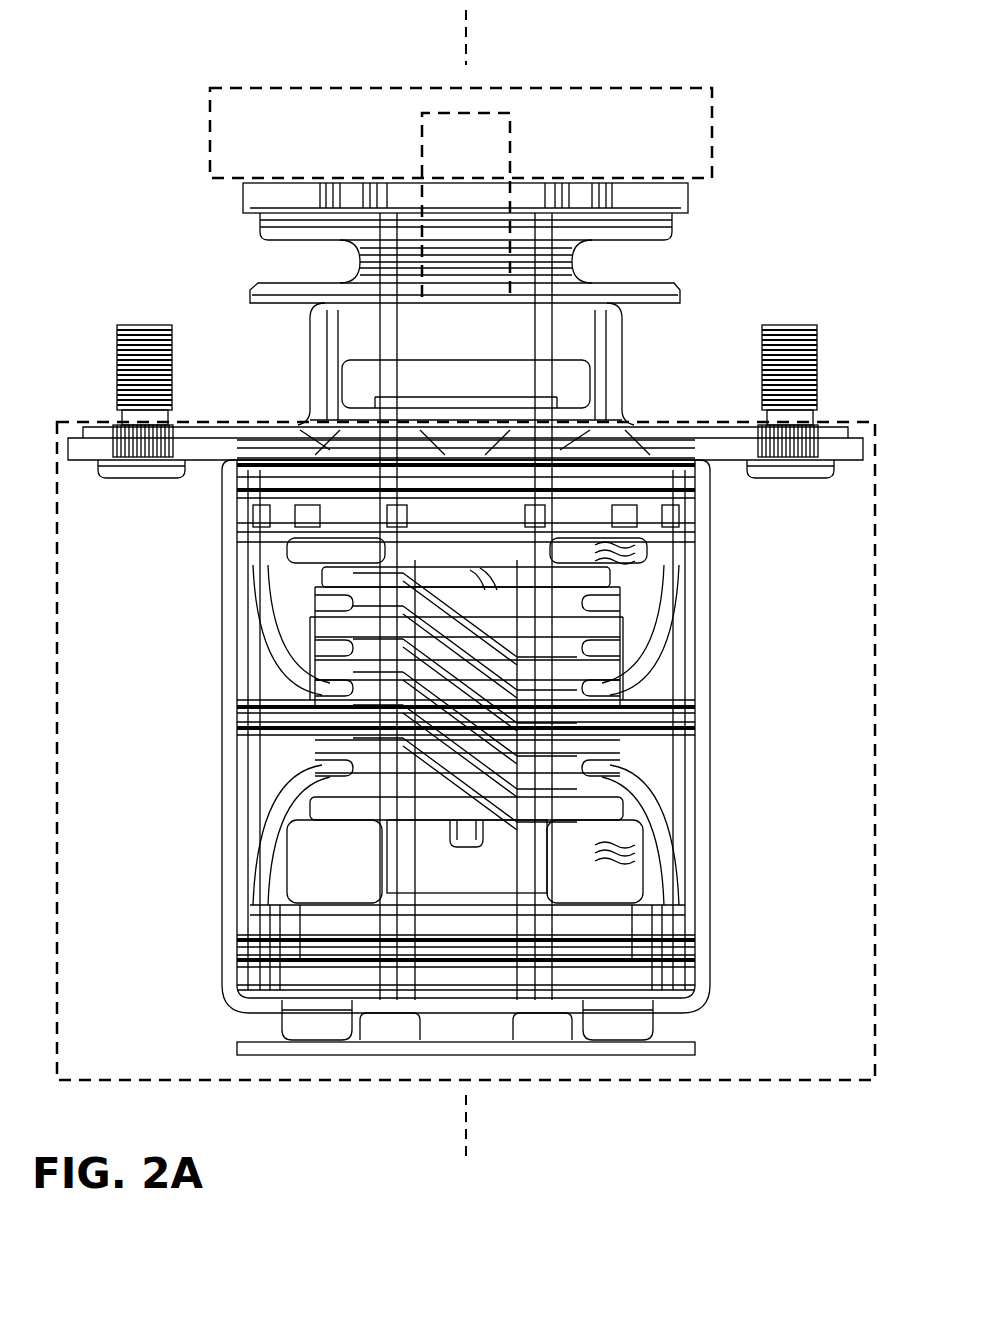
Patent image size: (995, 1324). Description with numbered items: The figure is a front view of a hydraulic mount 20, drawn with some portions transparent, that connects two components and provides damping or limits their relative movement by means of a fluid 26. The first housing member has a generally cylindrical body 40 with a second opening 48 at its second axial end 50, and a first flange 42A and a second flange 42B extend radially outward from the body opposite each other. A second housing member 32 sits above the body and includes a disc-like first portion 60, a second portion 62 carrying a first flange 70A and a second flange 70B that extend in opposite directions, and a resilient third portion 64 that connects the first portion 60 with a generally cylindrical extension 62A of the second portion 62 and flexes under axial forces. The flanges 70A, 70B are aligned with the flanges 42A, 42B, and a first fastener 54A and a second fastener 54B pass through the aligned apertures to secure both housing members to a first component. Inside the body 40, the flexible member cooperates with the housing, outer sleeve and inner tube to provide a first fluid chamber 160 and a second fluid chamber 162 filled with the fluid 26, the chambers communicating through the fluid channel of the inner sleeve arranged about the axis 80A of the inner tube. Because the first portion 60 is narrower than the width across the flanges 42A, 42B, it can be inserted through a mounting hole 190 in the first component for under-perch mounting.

The mount 20 is at (298, 46).
The axis 80A is at (467, 38).
The second housing member 32 is at (170, 259).
The first portion 60 is at (678, 197).
The third portion 64 is at (650, 252).
The extension 62A is at (617, 343).
The second portion 62 is at (740, 450).
The first fastener 54A is at (117, 372).
The second fastener 54B is at (808, 365).
The first flange 70A is at (97, 432).
The second flange 70B is at (840, 432).
The first flange 42A is at (78, 452).
The second flange 42B is at (845, 450).
The mounting hole 190 is at (243, 435).
The body 40 is at (223, 800).
The first fluid chamber 160 is at (326, 563).
The second fluid chamber 162 is at (334, 862).
The fluid 26 is at (640, 578).
The second axial end 50 is at (720, 982).
The second opening 48 is at (685, 1027).